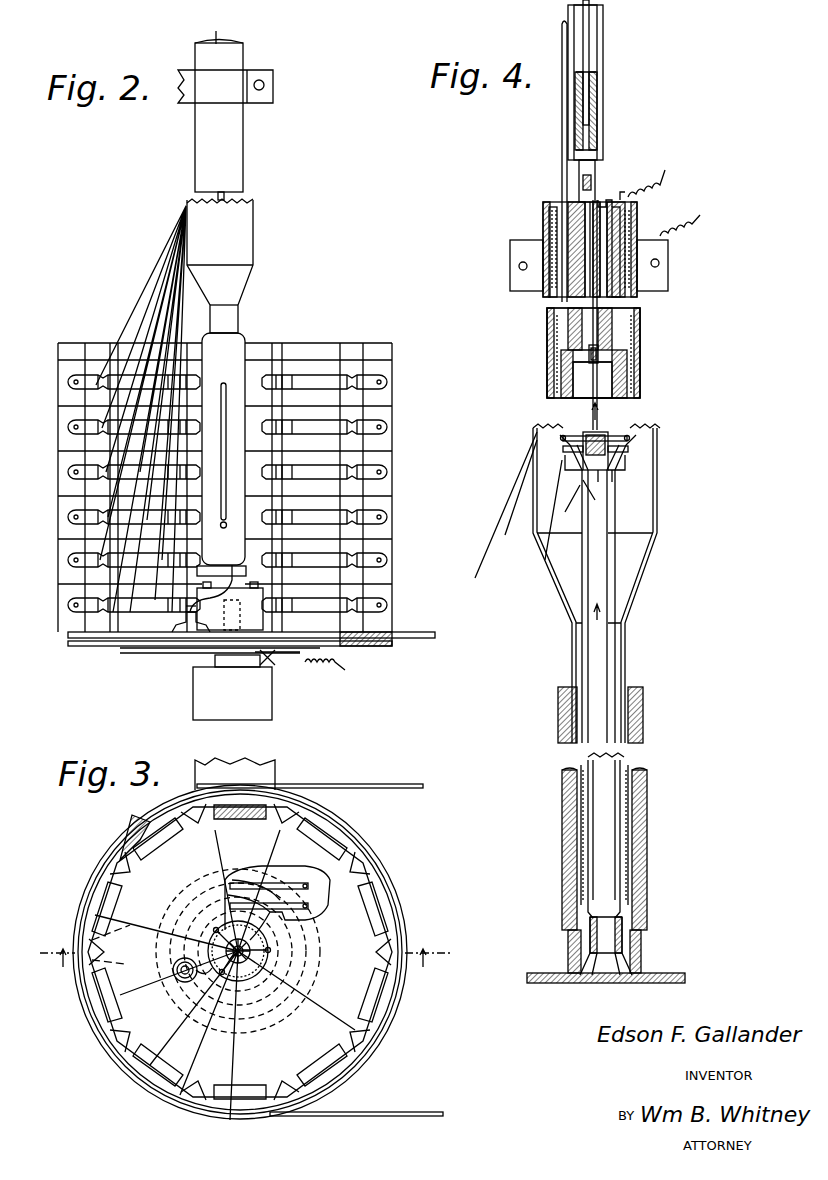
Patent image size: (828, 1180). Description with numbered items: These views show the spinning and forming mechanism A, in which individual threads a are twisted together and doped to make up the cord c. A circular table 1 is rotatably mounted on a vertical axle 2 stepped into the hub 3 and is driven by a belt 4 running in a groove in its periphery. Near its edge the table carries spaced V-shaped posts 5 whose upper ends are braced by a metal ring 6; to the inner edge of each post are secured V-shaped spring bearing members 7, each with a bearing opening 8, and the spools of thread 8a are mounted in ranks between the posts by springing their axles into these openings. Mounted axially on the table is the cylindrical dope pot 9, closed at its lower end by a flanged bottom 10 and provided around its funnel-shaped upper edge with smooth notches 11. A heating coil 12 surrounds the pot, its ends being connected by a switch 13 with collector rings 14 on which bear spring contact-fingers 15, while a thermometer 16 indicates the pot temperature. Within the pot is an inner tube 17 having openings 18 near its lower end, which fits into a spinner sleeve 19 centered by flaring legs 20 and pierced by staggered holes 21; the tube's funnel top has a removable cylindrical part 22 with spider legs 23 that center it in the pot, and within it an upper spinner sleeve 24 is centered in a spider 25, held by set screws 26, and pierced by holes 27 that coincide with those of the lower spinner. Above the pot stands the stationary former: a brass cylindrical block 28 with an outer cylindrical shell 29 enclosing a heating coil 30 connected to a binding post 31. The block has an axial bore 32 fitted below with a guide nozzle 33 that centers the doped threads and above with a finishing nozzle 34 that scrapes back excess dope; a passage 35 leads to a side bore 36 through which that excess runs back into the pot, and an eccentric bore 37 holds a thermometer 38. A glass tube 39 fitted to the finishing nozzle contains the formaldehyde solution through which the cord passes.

In FIG. 2, the circular table 1 is at (140, 654).
In FIG. 3, the circular table 1 is at (350, 918).
In FIG. 2, the vertical axle 2 is at (205, 625).
In FIG. 3, the vertical axle 2 is at (245, 964).
In FIG. 2, the hub 3 is at (190, 628).
In FIG. 2, the belt 4 is at (92, 645).
In FIG. 3, the belt 4 is at (348, 786).
In FIG. 2, the V-shaped post 5 is at (352, 403).
In FIG. 3, the V-shaped post 5 is at (355, 866).
In FIG. 2, the metal ring 6 is at (305, 347).
In FIG. 3, the metal ring 6 is at (375, 876).
In FIG. 2, the V-shaped spring bearing member 7 is at (278, 424).
In FIG. 3, the V-shaped spring bearing member 7 is at (282, 818).
In FIG. 2, the bearing opening 8 is at (320, 463).
In FIG. 3, the bearing opening 8 is at (100, 965).
In FIG. 2, the spool of thread 8a is at (346, 335).
In FIG. 3, the spool of thread 8a is at (320, 832).
In FIG. 2, the dope pot 9 is at (232, 248).
In FIG. 3, the dope pot 9 is at (250, 960).
In FIG. 4, the dope pot 9 is at (654, 520).
In FIG. 2, the flanged bottom 10 is at (240, 578).
In FIG. 4, the flanged bottom 10 is at (645, 968).
In FIG. 2, the notch 11 is at (232, 203).
In FIG. 3, the notch 11 is at (240, 990).
In FIG. 4, the notch 11 is at (620, 430).
In FIG. 4, the heating coil 12 is at (640, 778).
In FIG. 2, the switch 13 is at (200, 618).
In FIG. 3, the switch 13 is at (188, 982).
In FIG. 2, the collector ring 14 is at (212, 630).
In FIG. 3, the collector ring 14 is at (300, 906).
In FIG. 2, the spring contact-finger 15 is at (290, 658).
In FIG. 3, the spring contact-finger 15 is at (295, 903).
In FIG. 2, the thermometer 16 is at (232, 497).
In FIG. 4, the inner tube 17 is at (612, 650).
In FIG. 4, the opening 18 is at (616, 882).
In FIG. 4, the spinner sleeve 19 is at (583, 933).
In FIG. 4, the flaring leg 20 is at (605, 984).
In FIG. 4, the hole 21 is at (622, 942).
In FIG. 3, the cylindrical part 22 is at (265, 952).
In FIG. 4, the cylindrical part 22 is at (620, 464).
In FIG. 3, the spider leg 23 is at (232, 962).
In FIG. 4, the spider leg 23 is at (625, 452).
In FIG. 3, the upper spinner sleeve 24 is at (248, 965).
In FIG. 4, the upper spinner sleeve 24 is at (600, 432).
In FIG. 3, the spider 25 is at (242, 972).
In FIG. 4, the spider 25 is at (615, 434).
In FIG. 3, the set screw 26 is at (208, 950).
In FIG. 4, the set screw 26 is at (640, 430).
In FIG. 4, the hole 27 is at (606, 472).
In FIG. 4, the cylindrical block 28 is at (615, 316).
In FIG. 2, the outer cylindrical shell 29 is at (230, 142).
In FIG. 4, the outer cylindrical shell 29 is at (642, 336).
In FIG. 4, the heating coil 30 is at (552, 330).
In FIG. 4, the binding post 31 is at (628, 196).
In FIG. 4, the axial bore 32 is at (618, 304).
In FIG. 4, the guide nozzle 33 is at (600, 356).
In FIG. 4, the finishing nozzle 34 is at (583, 168).
In FIG. 4, the passage 35 is at (630, 215).
In FIG. 4, the side bore 36 is at (607, 252).
In FIG. 4, the eccentric bore 37 is at (555, 232).
In FIG. 4, the thermometer 38 is at (561, 112).
In FIG. 4, the glass tube 39 is at (600, 92).
In FIG. 2, the thread a is at (172, 302).
In FIG. 3, the thread a is at (205, 915).
In FIG. 4, the thread a is at (668, 830).
In FIG. 2, the stem b is at (228, 196).
In FIG. 4, the stem b is at (590, 382).
In FIG. 4, the cord c is at (595, 62).
In FIG. 2, the spinning and forming mechanism A is at (317, 250).